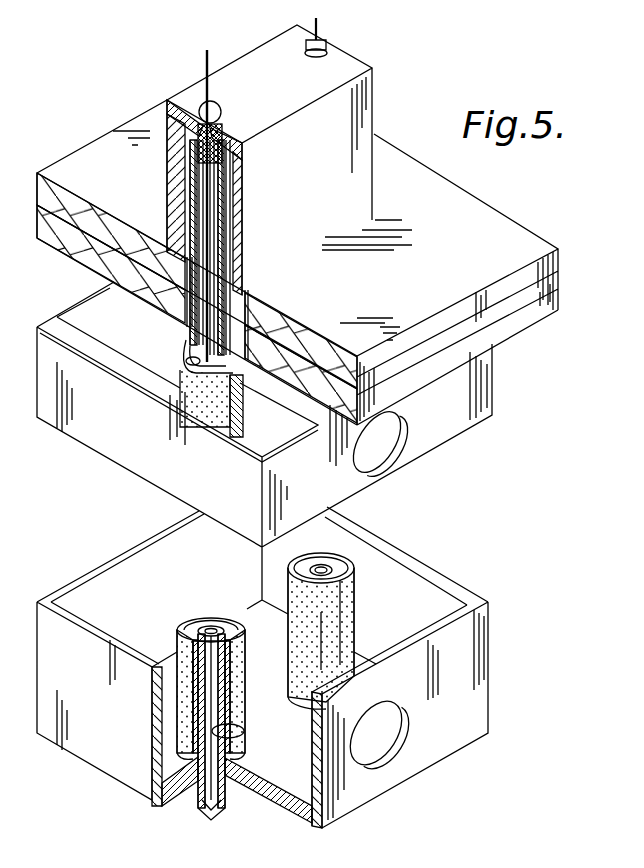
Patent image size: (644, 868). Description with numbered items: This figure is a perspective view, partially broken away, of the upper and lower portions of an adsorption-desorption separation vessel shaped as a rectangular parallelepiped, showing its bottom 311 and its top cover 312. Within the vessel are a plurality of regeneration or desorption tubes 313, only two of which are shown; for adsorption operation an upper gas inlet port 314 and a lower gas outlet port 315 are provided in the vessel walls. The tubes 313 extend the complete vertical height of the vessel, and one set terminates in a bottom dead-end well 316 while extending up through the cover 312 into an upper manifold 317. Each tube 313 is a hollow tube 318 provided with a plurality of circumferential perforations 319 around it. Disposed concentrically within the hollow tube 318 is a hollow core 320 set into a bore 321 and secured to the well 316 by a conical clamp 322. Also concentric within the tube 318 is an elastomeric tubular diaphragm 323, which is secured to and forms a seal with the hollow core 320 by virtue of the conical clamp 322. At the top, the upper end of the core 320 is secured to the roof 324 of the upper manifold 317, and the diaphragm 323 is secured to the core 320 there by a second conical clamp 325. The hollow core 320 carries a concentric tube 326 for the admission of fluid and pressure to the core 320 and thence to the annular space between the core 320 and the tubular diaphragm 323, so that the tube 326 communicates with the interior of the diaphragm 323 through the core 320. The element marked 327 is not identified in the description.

The bottom 311 is at (318, 822).
The top cover 312 is at (507, 313).
The regeneration or desorption tubes 313 is at (448, 552).
The upper gas inlet port 314 is at (390, 455).
The lower gas outlet port 315 is at (385, 752).
The bottom dead-end well 316 is at (206, 816).
The upper manifold 317 is at (357, 194).
The hollow tube 318 is at (234, 609).
The circumferential perforations 319 is at (185, 704).
The hollow core 320 is at (190, 623).
The bore 321 is at (230, 810).
The conical clamp 322 is at (175, 796).
The elastomeric tubular diaphragm 323 is at (244, 733).
The roof 324 is at (372, 70).
The conical clamp 325 is at (218, 166).
The concentric tube 326 is at (205, 76).
The collar ring 327 is at (172, 108).